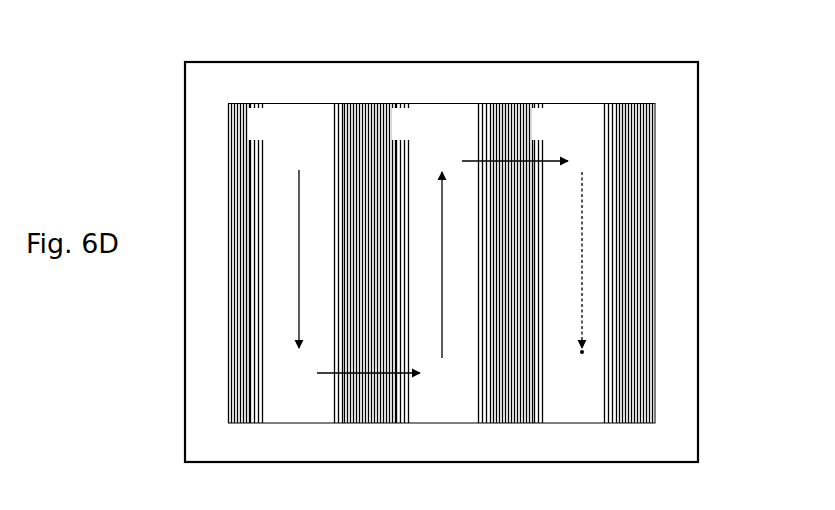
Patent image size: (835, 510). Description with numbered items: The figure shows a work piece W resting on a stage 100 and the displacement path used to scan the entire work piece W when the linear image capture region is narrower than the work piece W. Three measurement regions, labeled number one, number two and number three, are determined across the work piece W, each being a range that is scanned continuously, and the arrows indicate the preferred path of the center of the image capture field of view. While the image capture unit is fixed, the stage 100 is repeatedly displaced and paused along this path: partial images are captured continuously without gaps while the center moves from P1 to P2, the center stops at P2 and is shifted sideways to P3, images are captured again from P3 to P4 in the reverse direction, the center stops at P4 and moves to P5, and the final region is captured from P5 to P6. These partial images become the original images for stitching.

The stage 100 is at (698, 258).
The work piece W is at (441, 103).
The first position P1 is at (301, 248).
The second position P2 is at (356, 375).
The third position P3 is at (442, 278).
The fourth position P4 is at (501, 159).
The fifth position P5 is at (584, 249).
The sixth position P6 is at (584, 366).